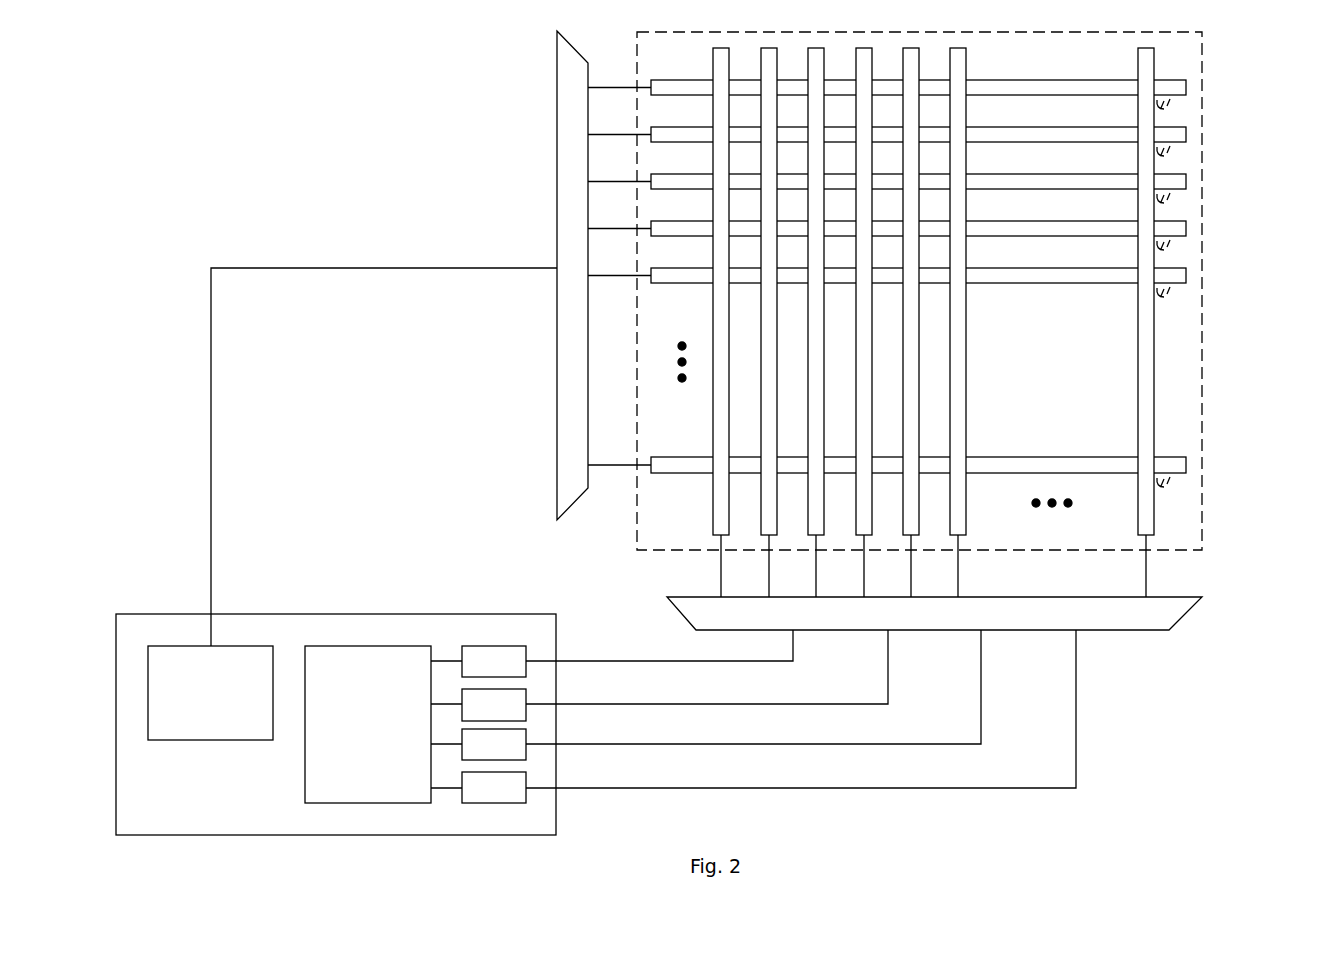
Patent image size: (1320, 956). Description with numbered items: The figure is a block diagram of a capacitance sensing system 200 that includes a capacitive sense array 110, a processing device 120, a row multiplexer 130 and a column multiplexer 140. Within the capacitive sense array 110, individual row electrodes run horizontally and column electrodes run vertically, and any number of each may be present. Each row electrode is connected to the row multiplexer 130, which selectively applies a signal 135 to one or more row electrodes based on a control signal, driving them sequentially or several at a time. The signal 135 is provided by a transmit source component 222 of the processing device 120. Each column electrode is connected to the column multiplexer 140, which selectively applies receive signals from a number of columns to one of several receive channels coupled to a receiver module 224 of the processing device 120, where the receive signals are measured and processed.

The capacitance sensing system 200 is at (271, 104).
The capacitive sense array 110 is at (1202, 252).
The row multiplexer 130 is at (556, 63).
The signal 135 is at (337, 268).
The column multiplexer 140 is at (1183, 616).
The processing device 120 is at (239, 824).
The transmit source component 222 is at (194, 717).
The receiver module 224 is at (351, 759).